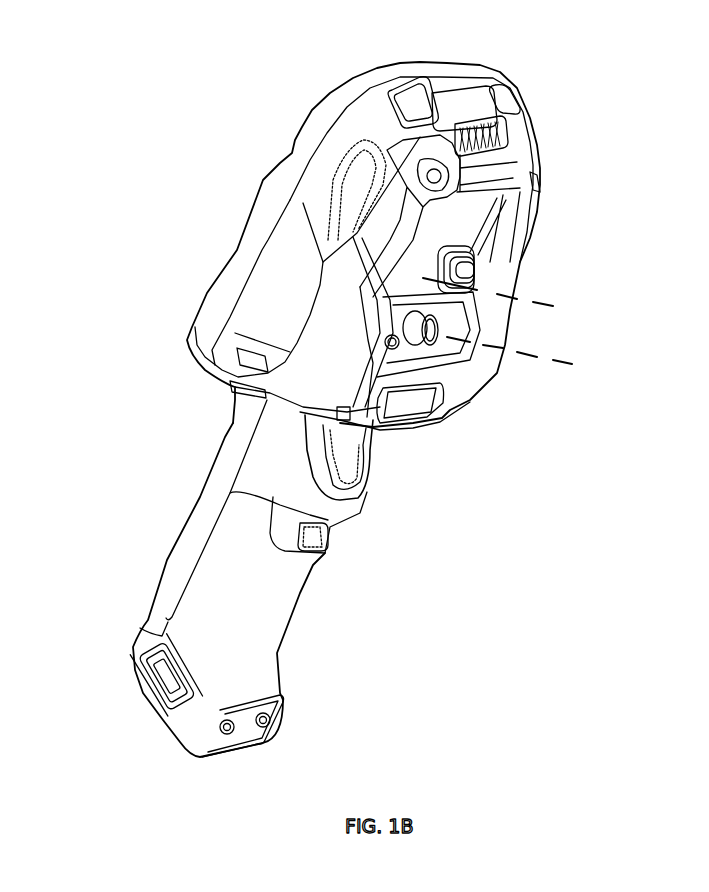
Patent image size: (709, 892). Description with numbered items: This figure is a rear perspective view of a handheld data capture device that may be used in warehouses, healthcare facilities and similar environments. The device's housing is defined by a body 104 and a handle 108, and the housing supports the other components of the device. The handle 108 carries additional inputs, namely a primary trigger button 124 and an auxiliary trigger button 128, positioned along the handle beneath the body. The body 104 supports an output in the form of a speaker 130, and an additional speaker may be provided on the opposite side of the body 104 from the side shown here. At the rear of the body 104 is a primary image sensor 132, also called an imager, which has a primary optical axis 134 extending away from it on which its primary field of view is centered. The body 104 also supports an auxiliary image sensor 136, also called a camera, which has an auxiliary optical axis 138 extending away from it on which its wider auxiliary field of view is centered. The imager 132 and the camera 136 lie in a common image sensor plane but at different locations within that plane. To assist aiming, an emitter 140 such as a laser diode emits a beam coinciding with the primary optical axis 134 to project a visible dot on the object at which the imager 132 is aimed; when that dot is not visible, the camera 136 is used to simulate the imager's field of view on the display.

The body 104 is at (347, 138).
The handle 108 is at (207, 570).
The primary trigger button 124 is at (347, 468).
The auxiliary trigger button 128 is at (330, 533).
The speaker 130 is at (307, 347).
The primary image sensor 132 is at (400, 336).
The primary optical axis 134 is at (546, 362).
The auxiliary image sensor 136 is at (440, 263).
The auxiliary optical axis 138 is at (578, 312).
The emitter 140 is at (413, 328).